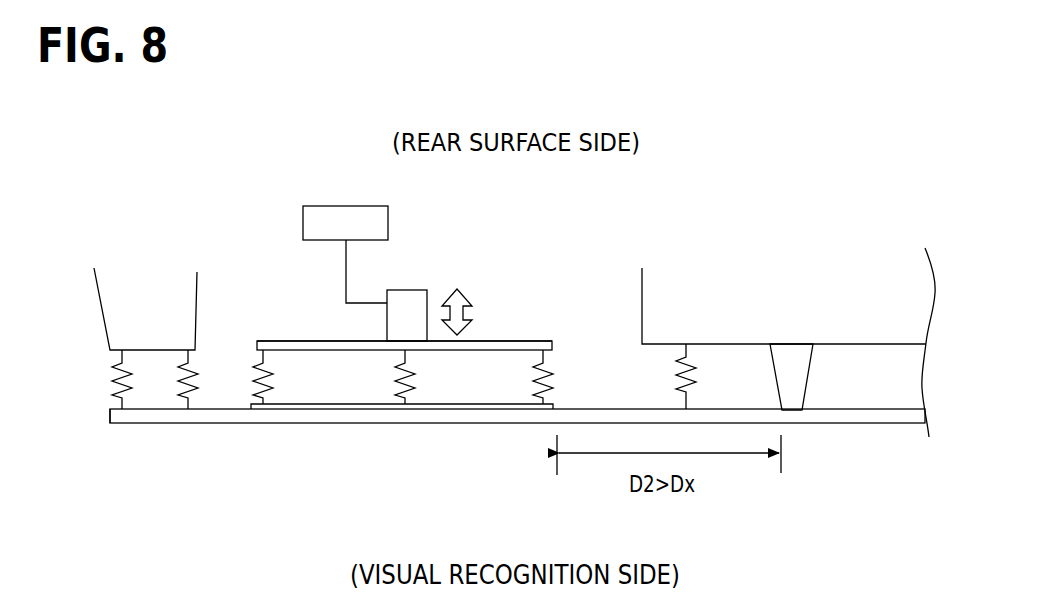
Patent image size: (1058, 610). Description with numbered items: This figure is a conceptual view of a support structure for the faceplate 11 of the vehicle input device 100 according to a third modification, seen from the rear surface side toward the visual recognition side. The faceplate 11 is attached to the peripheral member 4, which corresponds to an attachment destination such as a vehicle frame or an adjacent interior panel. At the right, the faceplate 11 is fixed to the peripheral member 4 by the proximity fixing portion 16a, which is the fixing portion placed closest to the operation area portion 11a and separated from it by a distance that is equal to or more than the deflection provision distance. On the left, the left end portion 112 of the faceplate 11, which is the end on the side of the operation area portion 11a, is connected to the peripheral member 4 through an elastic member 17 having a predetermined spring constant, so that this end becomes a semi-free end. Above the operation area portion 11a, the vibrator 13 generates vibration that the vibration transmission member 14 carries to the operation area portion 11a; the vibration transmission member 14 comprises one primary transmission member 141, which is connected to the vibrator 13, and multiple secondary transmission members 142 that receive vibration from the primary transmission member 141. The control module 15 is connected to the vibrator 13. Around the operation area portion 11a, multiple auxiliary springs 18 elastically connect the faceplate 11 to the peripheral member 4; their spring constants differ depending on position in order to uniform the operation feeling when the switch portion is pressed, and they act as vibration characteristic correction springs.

The vehicle input device 100 is at (170, 188).
The peripheral member 4 is at (153, 314).
The control module 15 is at (338, 206).
The vibrator 13 is at (422, 290).
The vibration transmission member 14 is at (292, 336).
The primary transmission member 141 is at (498, 340).
The secondary transmission member 142 is at (555, 373).
The auxiliary spring 18 is at (702, 376).
The elastic member 17 is at (106, 384).
The proximity fixing portion 16a is at (807, 392).
The faceplate 11 is at (872, 422).
The operation area portion 11a is at (402, 422).
The left end portion 112 is at (113, 422).